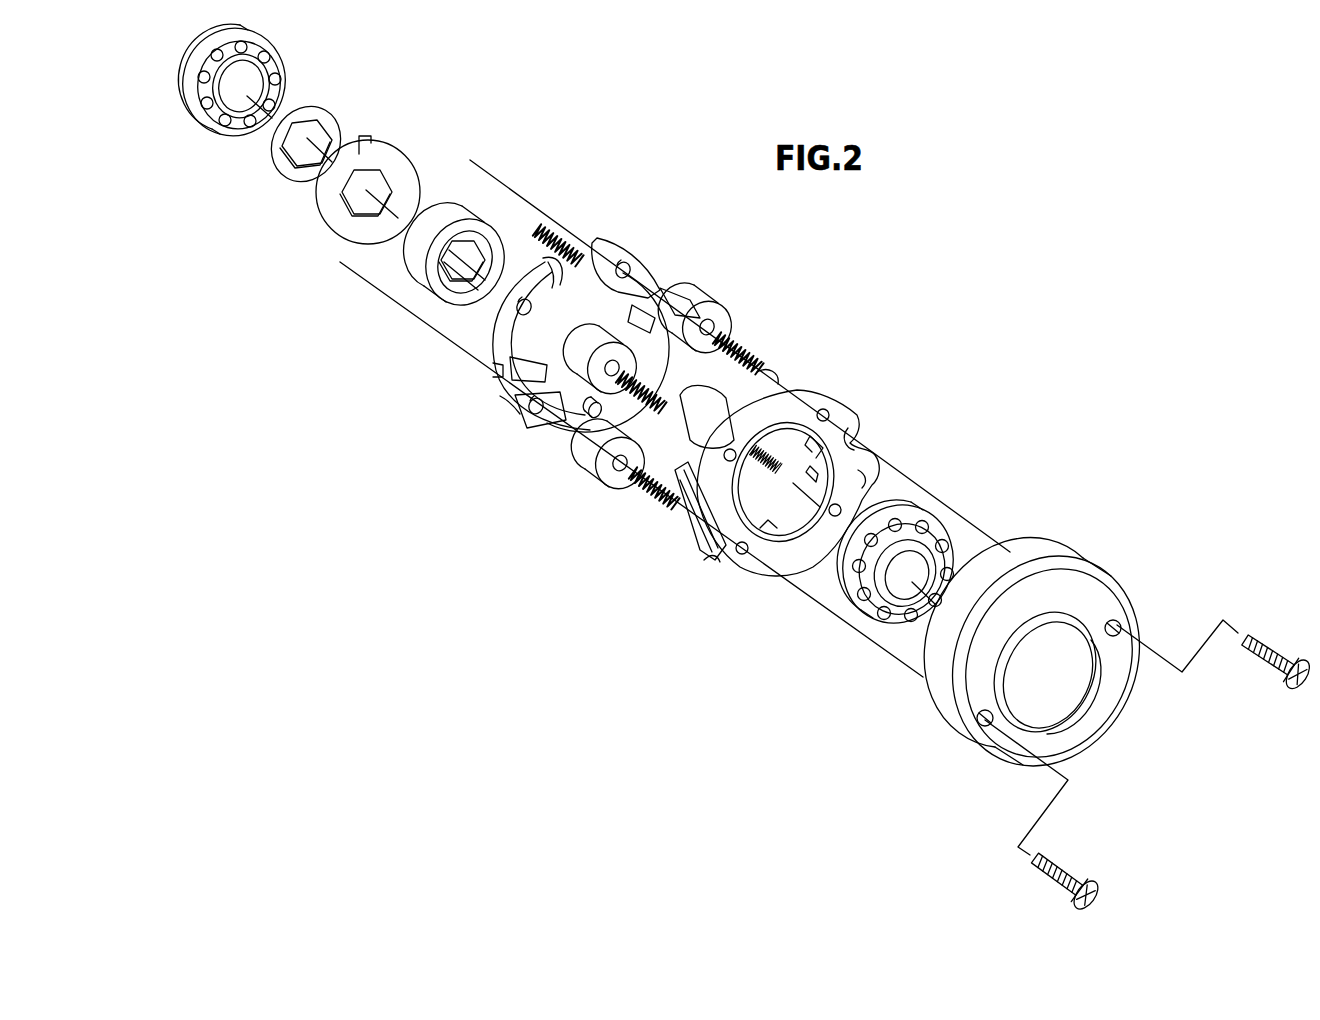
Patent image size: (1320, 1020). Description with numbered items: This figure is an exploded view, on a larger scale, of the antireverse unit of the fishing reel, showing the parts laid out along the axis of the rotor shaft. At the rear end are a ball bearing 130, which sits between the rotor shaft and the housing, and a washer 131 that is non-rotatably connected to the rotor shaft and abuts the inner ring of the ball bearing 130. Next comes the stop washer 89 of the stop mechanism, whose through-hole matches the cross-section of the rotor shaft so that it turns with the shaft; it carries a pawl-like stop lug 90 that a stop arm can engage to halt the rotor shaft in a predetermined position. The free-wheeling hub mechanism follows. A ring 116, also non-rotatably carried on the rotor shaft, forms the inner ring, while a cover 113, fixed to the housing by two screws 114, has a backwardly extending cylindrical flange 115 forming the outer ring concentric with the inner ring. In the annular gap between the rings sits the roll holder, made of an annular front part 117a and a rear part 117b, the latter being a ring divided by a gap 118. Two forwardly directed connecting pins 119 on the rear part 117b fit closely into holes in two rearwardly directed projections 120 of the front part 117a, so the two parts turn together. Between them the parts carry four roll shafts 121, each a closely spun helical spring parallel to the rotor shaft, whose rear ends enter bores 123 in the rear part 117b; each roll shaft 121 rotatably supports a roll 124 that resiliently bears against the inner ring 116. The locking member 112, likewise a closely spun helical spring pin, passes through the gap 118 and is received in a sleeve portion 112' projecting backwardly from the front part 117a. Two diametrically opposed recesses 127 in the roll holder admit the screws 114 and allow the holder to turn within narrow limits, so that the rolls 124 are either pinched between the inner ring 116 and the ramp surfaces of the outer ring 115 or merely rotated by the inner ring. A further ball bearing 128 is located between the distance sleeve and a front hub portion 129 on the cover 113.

The stop washer 89 is at (337, 218).
The stop lug 90 is at (375, 142).
The locking member 112 is at (573, 229).
The sleeve portion 112' is at (797, 362).
The cover 113 is at (1095, 606).
The screws 114 is at (1263, 660).
The cylindrical flange 115 is at (1046, 562).
The ring 116 is at (443, 212).
The front part 117a is at (790, 570).
The rear part 117b is at (555, 435).
The gap 118 is at (552, 268).
The connecting pins 119 is at (690, 300).
The projections 120 is at (883, 480).
The roll shafts 121 is at (752, 352).
The bore 123 is at (628, 265).
The roll 124 is at (594, 356).
The recesses 127 is at (663, 282).
The ball bearing 128 is at (852, 600).
The front hub portion 129 is at (1100, 690).
The ball bearing 130 is at (203, 96).
The washer 131 is at (283, 166).